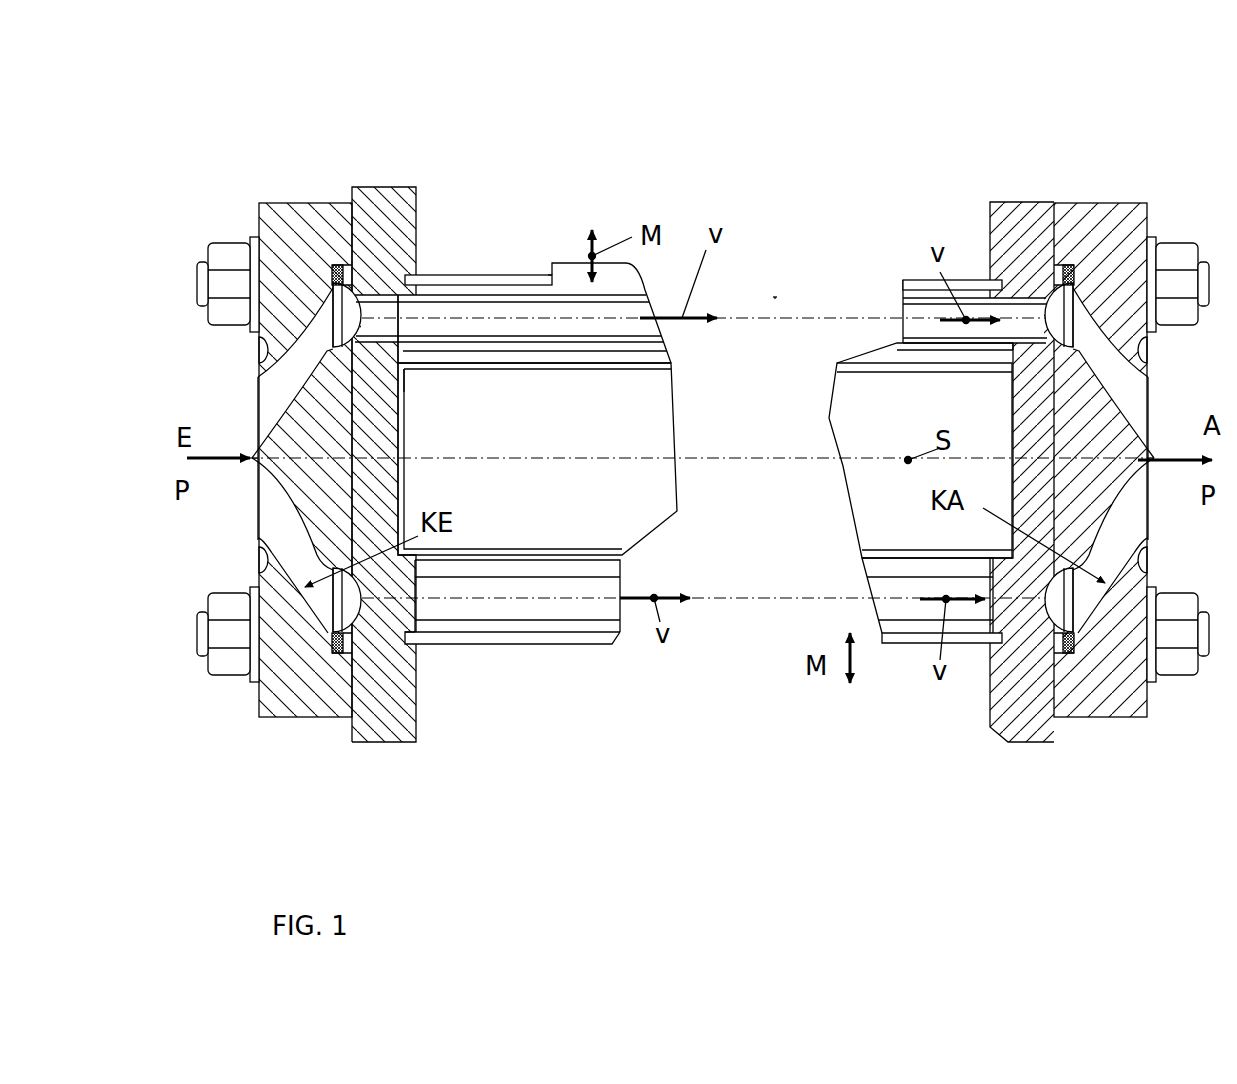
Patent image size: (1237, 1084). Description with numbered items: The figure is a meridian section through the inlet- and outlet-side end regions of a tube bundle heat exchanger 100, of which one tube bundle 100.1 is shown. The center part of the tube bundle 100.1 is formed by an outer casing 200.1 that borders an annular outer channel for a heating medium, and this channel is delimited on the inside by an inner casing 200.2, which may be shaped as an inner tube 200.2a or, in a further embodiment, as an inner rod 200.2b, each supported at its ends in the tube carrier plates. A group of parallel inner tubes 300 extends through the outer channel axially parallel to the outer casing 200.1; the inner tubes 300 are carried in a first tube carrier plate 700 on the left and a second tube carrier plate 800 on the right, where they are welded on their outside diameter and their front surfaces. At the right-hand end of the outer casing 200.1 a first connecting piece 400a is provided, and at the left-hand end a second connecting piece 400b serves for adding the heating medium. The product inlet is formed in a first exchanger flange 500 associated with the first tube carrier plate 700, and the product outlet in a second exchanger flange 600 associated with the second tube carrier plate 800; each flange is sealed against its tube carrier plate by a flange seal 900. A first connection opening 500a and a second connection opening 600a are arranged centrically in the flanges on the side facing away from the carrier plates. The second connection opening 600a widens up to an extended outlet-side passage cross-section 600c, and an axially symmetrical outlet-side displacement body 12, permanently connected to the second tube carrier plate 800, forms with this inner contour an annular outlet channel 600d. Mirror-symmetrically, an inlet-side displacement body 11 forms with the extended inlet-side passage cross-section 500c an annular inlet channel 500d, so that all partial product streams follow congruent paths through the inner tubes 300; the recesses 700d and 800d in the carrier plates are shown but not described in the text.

The tube bundle heat exchanger 100 is at (775, 297).
The tube bundle 100.1 is at (807, 230).
The inlet-side displacement body 11 is at (313, 476).
The outlet-side displacement body 12 is at (1108, 427).
The outer casing 200.1 is at (457, 280).
The inner casing 200.2 is at (580, 368).
The inner tube 200.2a is at (519, 405).
The inner rod 200.2b is at (520, 424).
The inner tubes 300 is at (917, 320).
The first connecting piece 400a is at (849, 703).
The second connecting piece 400b is at (549, 268).
The first exchanger flange 500 is at (305, 657).
The first connection opening 500a is at (258, 513).
The extended inlet-side passage cross-section 500c is at (343, 285).
The inlet channel 500d is at (298, 357).
The second exchanger flange 600 is at (1110, 660).
The second connection opening 600a is at (1147, 513).
The extended outlet-side passage cross-section 600c is at (1063, 288).
The outlet channel 600d is at (1101, 341).
The first tube carrier plate 700 is at (387, 688).
The inlet socket body recess 700d is at (379, 341).
The second tube carrier plate 800 is at (1022, 687).
The outlet socket body recess 800d is at (1018, 344).
The flange seal 900 is at (340, 643).